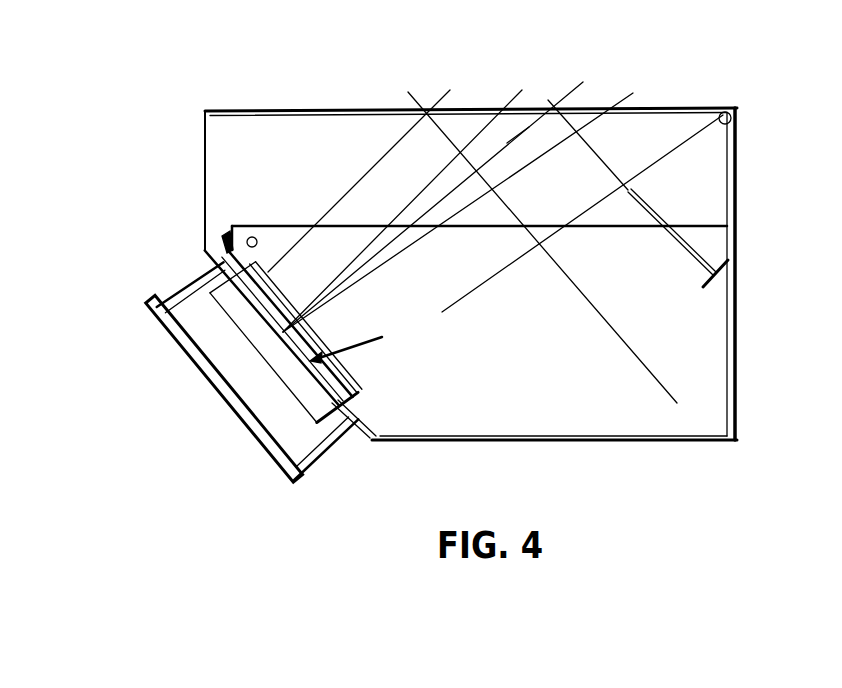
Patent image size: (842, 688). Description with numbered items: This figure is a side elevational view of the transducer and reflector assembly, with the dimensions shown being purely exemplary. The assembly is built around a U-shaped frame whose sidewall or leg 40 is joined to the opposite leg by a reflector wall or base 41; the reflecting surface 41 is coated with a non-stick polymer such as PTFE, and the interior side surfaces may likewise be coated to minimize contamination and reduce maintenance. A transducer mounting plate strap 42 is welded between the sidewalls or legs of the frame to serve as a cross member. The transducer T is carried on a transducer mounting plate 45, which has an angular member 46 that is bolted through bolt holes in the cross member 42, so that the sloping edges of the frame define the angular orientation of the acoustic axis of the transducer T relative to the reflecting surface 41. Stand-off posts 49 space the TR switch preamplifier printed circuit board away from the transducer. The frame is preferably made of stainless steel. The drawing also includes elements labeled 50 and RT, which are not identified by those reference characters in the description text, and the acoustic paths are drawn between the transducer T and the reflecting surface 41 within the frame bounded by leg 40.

The sidewall or leg 40 is at (587, 422).
The reflector wall or base 41 is at (593, 105).
The transducer mounting plate strap 42 is at (243, 226).
The transducer mounting plate 45 is at (360, 422).
The angular member 46 is at (224, 237).
The stand-off posts 49 is at (192, 282).
The mounting plate 50 is at (208, 383).
The reflective target RT is at (738, 117).
The transducer T is at (262, 280).